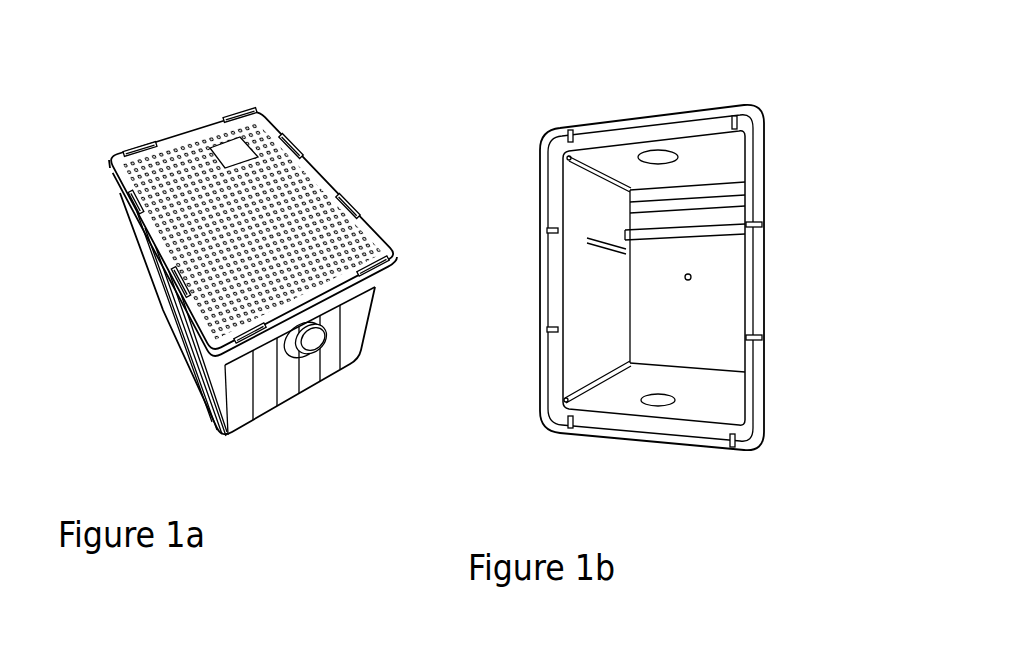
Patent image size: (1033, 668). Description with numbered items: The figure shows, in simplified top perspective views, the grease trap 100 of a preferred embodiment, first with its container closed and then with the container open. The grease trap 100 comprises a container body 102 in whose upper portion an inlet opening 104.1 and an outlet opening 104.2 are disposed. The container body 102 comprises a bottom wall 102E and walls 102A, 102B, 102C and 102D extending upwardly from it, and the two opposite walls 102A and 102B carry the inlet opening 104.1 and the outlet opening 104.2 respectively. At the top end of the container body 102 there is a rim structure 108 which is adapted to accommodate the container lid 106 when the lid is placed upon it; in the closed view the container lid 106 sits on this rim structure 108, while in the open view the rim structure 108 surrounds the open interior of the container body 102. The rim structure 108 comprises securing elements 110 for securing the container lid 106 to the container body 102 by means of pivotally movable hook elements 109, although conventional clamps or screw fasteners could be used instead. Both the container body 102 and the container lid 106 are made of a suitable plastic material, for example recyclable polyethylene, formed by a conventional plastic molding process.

In FIG. 1A, the grease trap 100 is at (235, 272).
In FIG. 1A, the container body 102 is at (270, 342).
In FIG. 1B, the container body 102 is at (690, 266).
In FIG. 1B, the wall 102A is at (711, 128).
In FIG. 1B, the wall 102B is at (718, 426).
In FIG. 1B, the wall 102C is at (586, 324).
In FIG. 1B, the wall 102D is at (763, 237).
In FIG. 1B, the bottom wall 102E is at (697, 273).
In FIG. 1A, the inlet opening 104.1 is at (309, 346).
In FIG. 1B, the inlet opening 104.1 is at (658, 150).
In FIG. 1B, the outlet opening 104.2 is at (660, 403).
In FIG. 1A, the container lid 106 is at (223, 207).
In FIG. 1B, the rim structure 108 is at (541, 406).
In FIG. 1A, the hook element 109 is at (130, 193).
In FIG. 1B, the securing element 110 is at (570, 128).